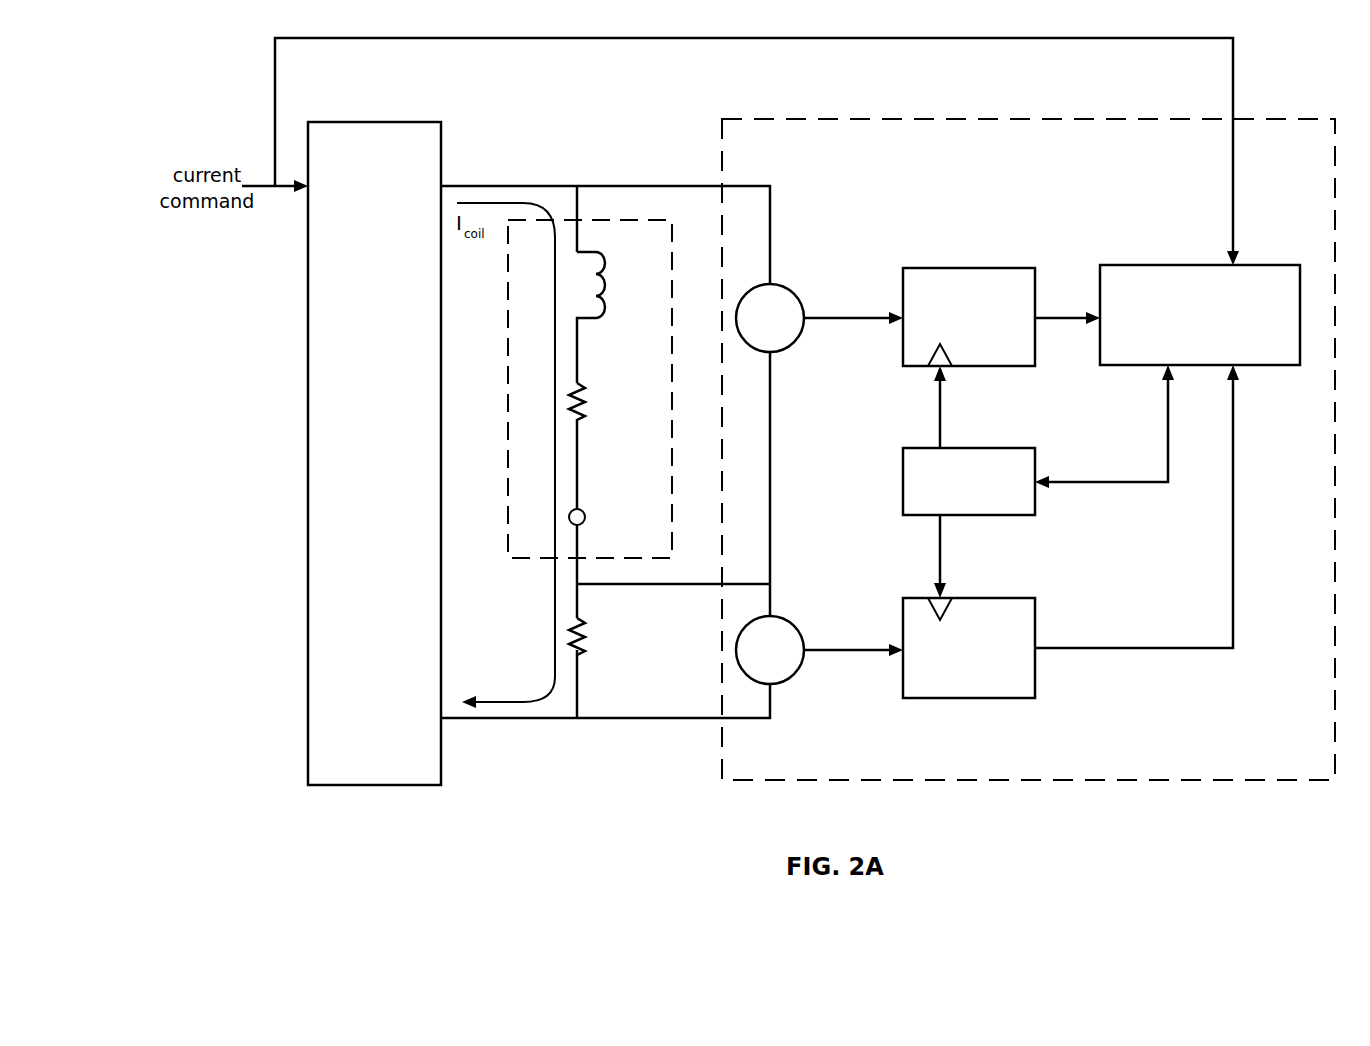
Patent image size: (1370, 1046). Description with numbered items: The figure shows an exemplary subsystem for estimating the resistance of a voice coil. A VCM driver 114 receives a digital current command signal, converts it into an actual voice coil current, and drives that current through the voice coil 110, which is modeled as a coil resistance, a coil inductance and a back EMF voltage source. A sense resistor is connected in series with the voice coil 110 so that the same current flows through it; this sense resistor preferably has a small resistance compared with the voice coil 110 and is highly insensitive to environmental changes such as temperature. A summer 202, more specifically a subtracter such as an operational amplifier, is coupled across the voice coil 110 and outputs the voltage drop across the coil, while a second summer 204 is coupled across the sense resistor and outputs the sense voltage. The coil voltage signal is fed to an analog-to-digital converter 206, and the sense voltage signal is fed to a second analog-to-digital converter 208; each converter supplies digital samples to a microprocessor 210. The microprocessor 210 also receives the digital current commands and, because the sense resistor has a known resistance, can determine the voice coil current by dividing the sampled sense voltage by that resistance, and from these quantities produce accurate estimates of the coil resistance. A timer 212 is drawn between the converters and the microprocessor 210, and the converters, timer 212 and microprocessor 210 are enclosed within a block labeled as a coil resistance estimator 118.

The voice coil 110 is at (655, 218).
The VCM driver 114 is at (377, 795).
The coil resistance estimator 118 is at (1244, 782).
The summer 202 is at (792, 283).
The summer 204 is at (797, 612).
The analog-to-digital converter 206 is at (968, 265).
The analog-to-digital converter 208 is at (1012, 592).
The microprocessor 210 is at (1258, 262).
The timer 212 is at (995, 440).